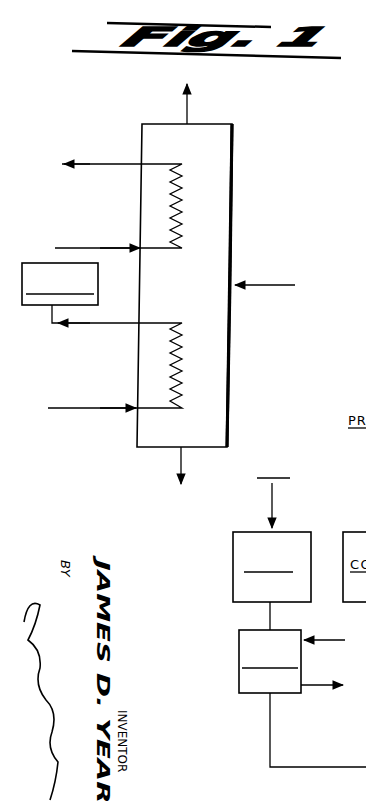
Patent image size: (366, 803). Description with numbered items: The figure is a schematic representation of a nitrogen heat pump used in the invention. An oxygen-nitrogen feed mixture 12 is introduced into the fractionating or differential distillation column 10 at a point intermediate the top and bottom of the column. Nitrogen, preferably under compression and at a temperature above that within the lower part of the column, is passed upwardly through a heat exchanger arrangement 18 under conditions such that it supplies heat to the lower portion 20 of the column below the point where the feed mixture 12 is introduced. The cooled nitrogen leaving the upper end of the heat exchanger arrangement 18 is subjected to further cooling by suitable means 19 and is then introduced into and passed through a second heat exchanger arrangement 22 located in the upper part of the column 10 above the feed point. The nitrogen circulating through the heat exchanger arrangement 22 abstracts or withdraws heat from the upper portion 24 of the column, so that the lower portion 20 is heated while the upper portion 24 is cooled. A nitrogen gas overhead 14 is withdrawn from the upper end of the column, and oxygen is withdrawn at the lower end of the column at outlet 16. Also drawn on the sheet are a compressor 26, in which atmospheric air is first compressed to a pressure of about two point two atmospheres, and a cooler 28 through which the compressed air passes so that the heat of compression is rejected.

The fractionating column 10 is at (238, 222).
The oxygen-nitrogen feed mixture 12 is at (285, 285).
The nitrogen gas overhead 14 is at (190, 105).
The oxygen withdrawal point 16 is at (186, 462).
The heat exchanger arrangement 18 is at (183, 372).
The cooling means 19 is at (30, 262).
The lower portion of the column 20 is at (232, 340).
The heat exchanger arrangement 22 is at (182, 227).
The upper portion of the column 24 is at (235, 177).
The compressor 26 is at (252, 528).
The cooler 28 is at (300, 695).